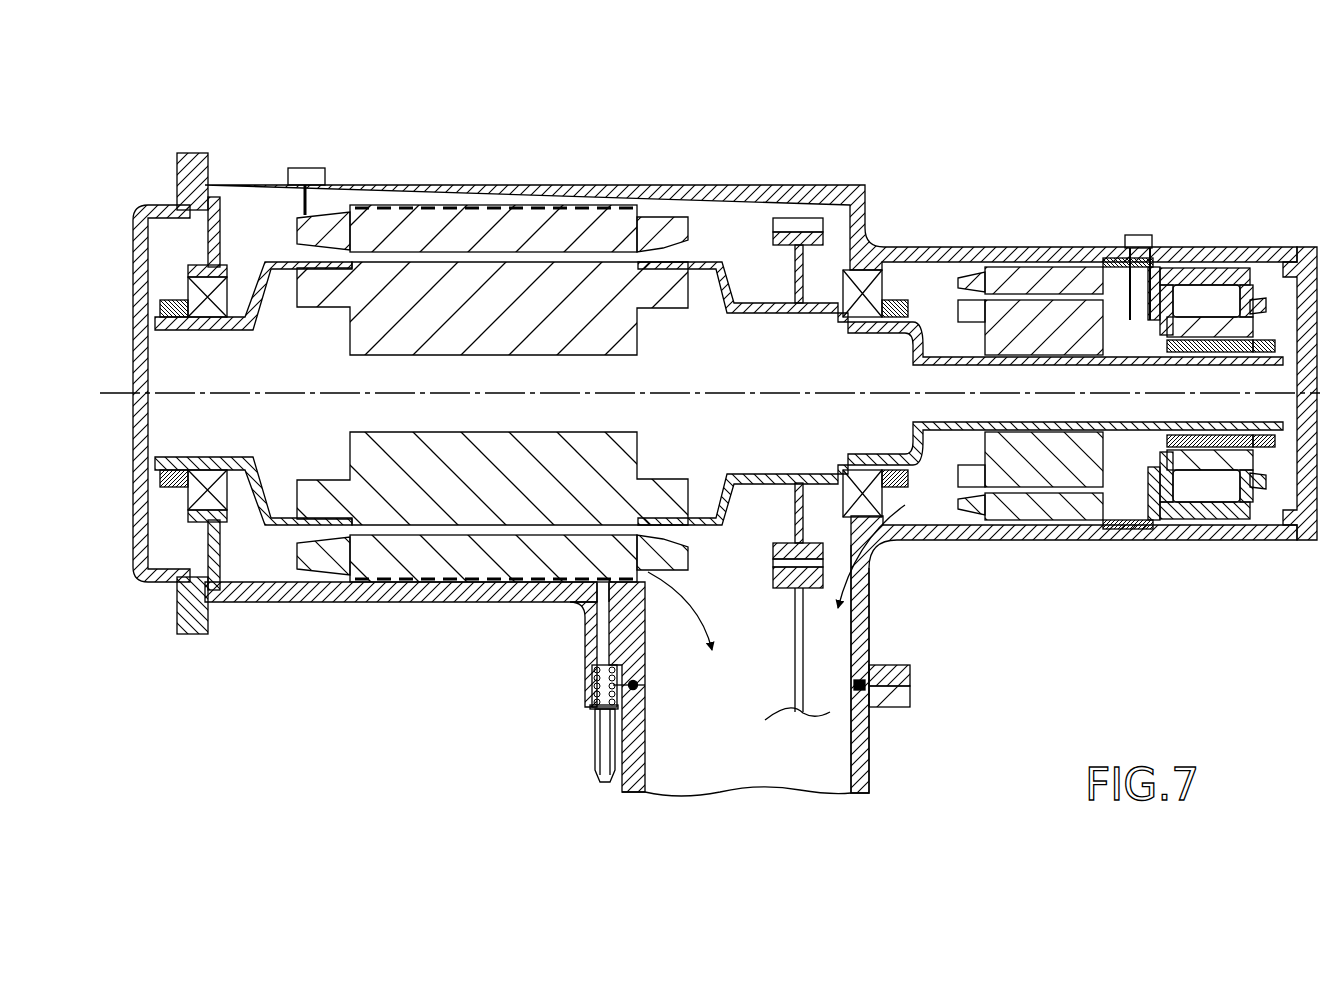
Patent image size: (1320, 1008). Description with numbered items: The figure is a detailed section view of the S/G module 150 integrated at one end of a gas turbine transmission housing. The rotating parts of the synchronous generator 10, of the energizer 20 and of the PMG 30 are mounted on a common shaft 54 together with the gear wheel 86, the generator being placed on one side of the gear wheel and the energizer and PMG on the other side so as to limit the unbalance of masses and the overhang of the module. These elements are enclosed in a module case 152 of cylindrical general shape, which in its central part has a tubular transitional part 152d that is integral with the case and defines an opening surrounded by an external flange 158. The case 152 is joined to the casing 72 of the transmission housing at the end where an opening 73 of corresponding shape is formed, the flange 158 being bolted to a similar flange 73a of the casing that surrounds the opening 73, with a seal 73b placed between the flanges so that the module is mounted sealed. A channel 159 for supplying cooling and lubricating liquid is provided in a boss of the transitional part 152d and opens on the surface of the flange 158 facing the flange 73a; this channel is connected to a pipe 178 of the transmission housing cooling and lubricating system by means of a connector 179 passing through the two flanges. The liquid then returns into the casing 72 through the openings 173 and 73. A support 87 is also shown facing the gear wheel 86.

The S/G module 150 is at (483, 168).
The synchronous generator 10 is at (285, 230).
The module case 152 is at (704, 186).
The tubular transitional part 152d is at (866, 594).
The gear wheel 86 is at (799, 216).
The lower stator support 87 is at (778, 578).
The shaft 54 is at (762, 300).
The energizer 20 is at (930, 247).
The PMG 30 is at (1262, 290).
The casing 72 is at (863, 757).
The opening 73 is at (696, 733).
The flange 73a is at (905, 691).
The seal 73b is at (880, 700).
The external flange 158 is at (895, 668).
The channel 159 is at (605, 621).
The opening 173 is at (678, 669).
The pipe 178 is at (598, 736).
The connector 179 is at (590, 690).